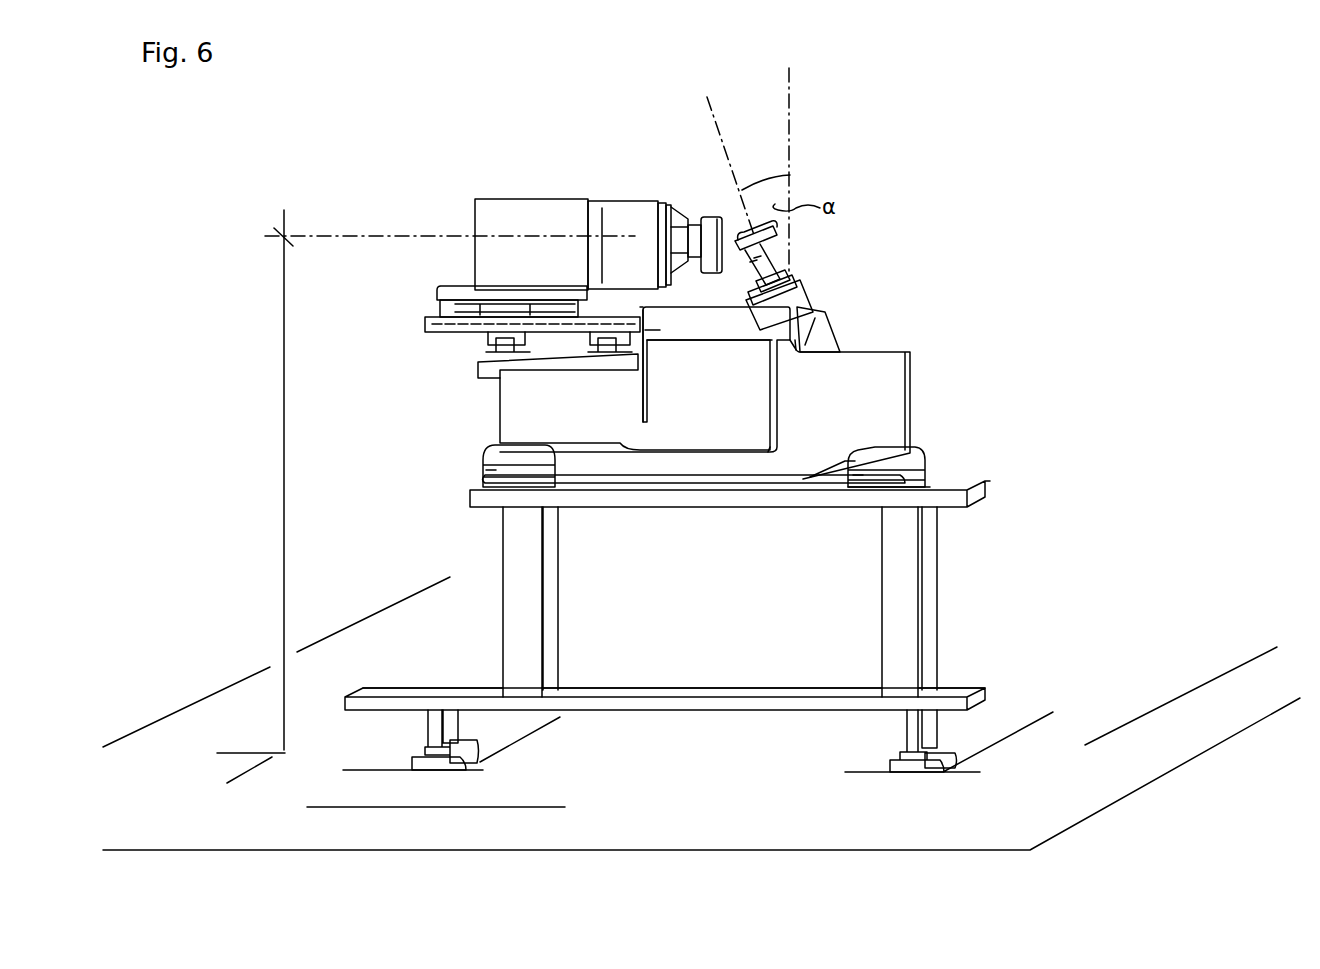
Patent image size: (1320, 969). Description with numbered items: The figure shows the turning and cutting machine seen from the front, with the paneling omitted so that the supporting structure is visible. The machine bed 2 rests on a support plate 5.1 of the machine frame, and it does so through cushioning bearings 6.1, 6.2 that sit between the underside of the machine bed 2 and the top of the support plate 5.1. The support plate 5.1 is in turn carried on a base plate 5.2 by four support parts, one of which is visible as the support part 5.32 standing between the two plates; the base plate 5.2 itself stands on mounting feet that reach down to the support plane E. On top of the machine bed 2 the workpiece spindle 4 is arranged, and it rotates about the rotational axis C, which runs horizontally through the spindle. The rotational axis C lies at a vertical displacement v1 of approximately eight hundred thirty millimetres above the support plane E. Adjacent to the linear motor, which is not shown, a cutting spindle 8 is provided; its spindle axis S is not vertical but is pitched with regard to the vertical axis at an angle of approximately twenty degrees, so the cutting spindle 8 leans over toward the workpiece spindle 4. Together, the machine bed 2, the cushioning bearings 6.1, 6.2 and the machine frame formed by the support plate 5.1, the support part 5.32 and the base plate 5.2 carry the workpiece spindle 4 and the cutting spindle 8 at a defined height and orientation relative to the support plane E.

The machine bed 2 is at (852, 424).
The workpiece spindle 4 is at (500, 215).
The cutting spindle 8 is at (822, 318).
The support plate 5.1 is at (990, 487).
The base plate 5.2 is at (990, 690).
The support part 5.32 is at (905, 575).
The cushioning bearing 6.1 is at (915, 447).
The cushioning bearing 6.2 is at (480, 452).
The rotational axis C is at (360, 236).
The spindle axis S is at (707, 97).
The support plane E is at (1010, 843).
The vertical displacement v1 is at (283, 406).